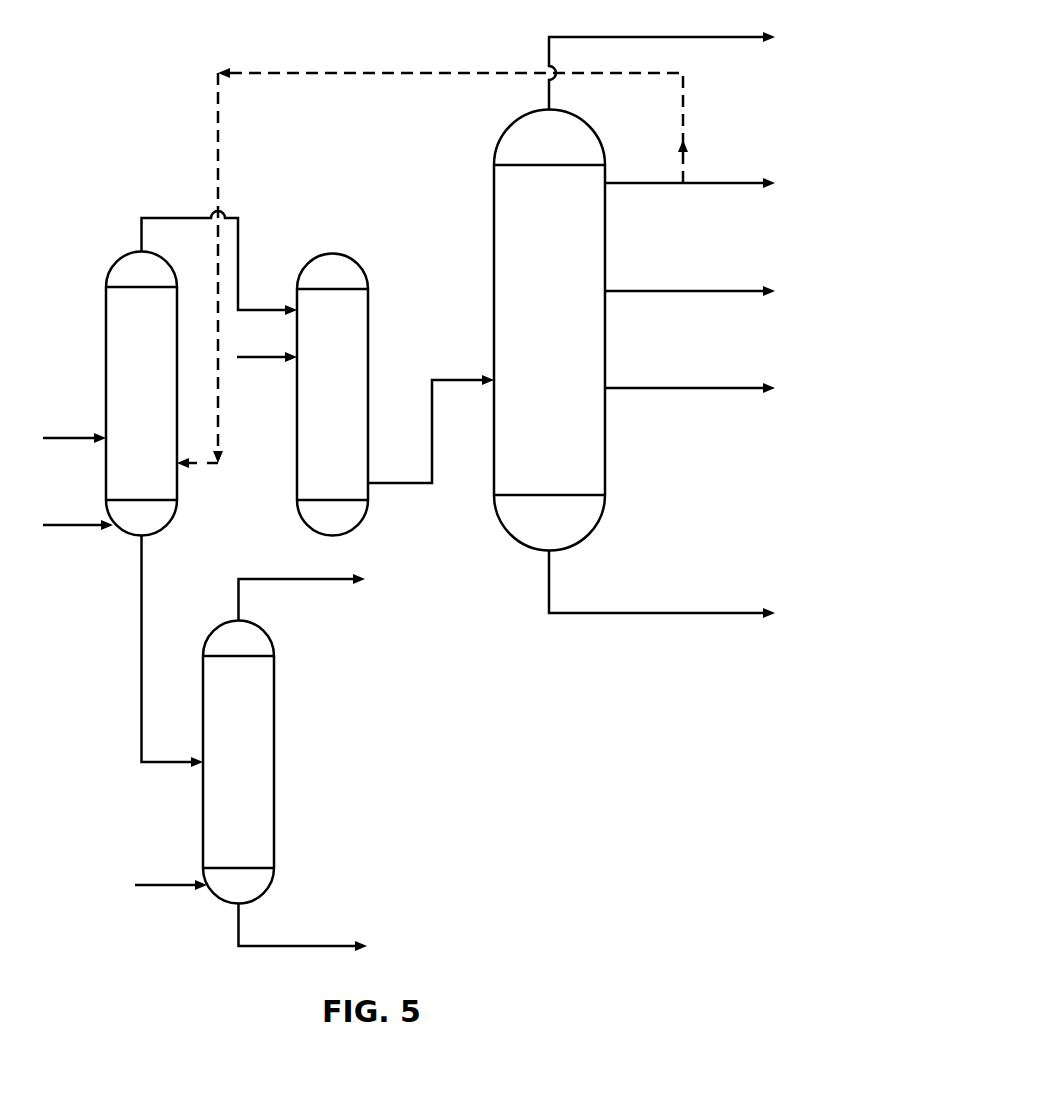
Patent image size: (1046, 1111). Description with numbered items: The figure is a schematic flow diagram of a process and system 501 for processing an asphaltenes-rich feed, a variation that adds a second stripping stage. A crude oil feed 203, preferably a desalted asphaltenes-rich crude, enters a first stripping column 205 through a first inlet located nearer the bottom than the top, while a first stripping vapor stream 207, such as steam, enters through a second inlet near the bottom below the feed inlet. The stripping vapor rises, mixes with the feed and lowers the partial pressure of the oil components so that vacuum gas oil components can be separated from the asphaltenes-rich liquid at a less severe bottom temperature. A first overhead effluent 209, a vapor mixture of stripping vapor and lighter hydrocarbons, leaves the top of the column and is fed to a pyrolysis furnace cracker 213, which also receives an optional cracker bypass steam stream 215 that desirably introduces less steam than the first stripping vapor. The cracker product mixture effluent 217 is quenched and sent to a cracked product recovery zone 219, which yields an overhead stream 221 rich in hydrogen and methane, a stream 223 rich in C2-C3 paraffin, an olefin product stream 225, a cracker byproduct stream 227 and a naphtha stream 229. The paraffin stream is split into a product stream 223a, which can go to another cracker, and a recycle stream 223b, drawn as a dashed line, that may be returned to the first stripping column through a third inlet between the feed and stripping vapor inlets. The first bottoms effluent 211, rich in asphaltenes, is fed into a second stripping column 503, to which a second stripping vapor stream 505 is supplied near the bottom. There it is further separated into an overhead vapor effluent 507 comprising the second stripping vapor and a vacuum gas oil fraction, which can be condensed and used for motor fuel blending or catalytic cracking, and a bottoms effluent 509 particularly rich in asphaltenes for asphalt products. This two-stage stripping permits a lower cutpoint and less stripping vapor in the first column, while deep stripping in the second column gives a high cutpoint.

The process and system 501 is at (157, 100).
The crude oil feed 203 is at (74, 428).
The first stripping column 205 is at (163, 400).
The first stripping vapor stream 207 is at (78, 513).
The first overhead effluent 209 is at (220, 252).
The first bottoms effluent 211 is at (142, 598).
The pyrolysis furnace cracker 213 is at (355, 401).
The cracker bypass steam stream 215 is at (267, 345).
The cracker product mixture effluent 217 is at (431, 429).
The cracked product recovery zone 219 is at (565, 376).
The overhead stream 221 is at (662, 59).
The stream rich in C2-C3 paraffin 223 is at (644, 171).
The product stream 223a is at (729, 173).
The recycle stream 223b is at (242, 412).
The olefin product stream 225 is at (690, 281).
The cracker byproduct stream 227 is at (690, 378).
The naphtha stream 229 is at (662, 584).
The second stripping column 503 is at (258, 777).
The second stripping vapor stream 505 is at (171, 874).
The overhead vapor effluent 507 is at (302, 587).
The bottoms effluent 509 is at (303, 927).